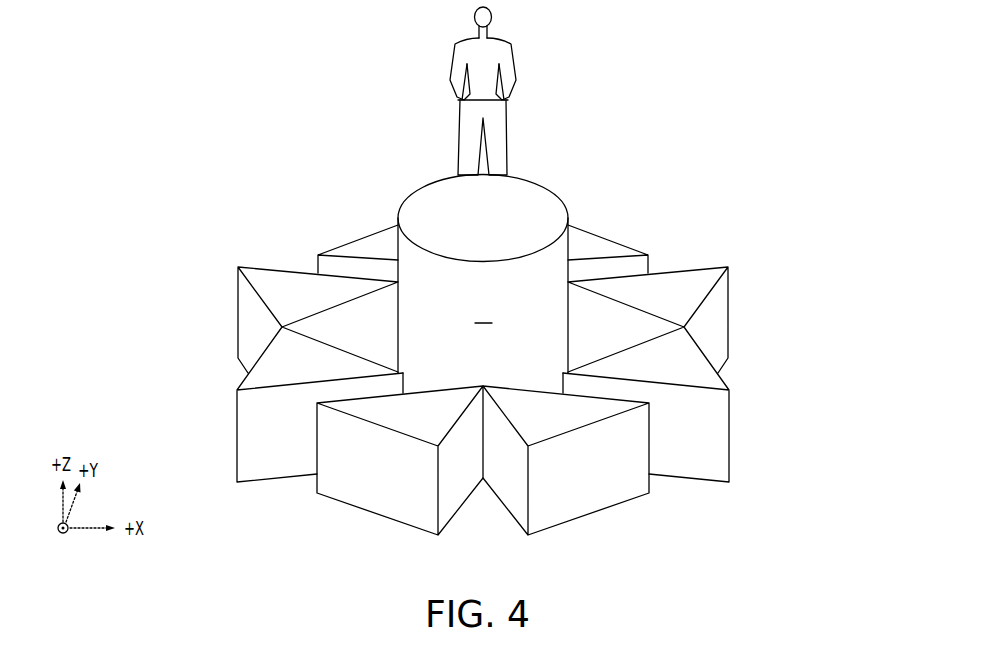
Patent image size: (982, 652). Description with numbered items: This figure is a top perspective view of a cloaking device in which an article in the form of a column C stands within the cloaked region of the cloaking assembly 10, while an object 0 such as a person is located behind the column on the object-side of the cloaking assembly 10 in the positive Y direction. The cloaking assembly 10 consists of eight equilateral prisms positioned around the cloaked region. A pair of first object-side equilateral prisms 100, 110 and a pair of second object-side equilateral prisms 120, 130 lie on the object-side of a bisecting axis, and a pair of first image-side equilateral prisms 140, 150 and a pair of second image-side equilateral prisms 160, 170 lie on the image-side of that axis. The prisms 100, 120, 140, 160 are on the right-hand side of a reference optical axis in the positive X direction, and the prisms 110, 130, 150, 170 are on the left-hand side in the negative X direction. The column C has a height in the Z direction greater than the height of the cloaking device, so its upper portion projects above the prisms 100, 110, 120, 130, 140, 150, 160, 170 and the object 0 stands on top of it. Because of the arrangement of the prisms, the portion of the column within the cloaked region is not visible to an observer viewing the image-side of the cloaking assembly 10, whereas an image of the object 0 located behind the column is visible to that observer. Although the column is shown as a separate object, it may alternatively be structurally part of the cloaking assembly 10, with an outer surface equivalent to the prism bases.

The object 0 is at (518, 55).
The cloaking assembly 10 is at (742, 165).
The first object-side equilateral prism 100 is at (623, 237).
The first object-side equilateral prism 110 is at (343, 237).
The second object-side equilateral prism 120 is at (729, 310).
The second object-side equilateral prism 130 is at (237, 310).
The first image-side equilateral prism 140 is at (731, 437).
The first image-side equilateral prism 150 is at (235, 437).
The second image-side equilateral prism 160 is at (598, 513).
The second image-side equilateral prism 170 is at (368, 513).